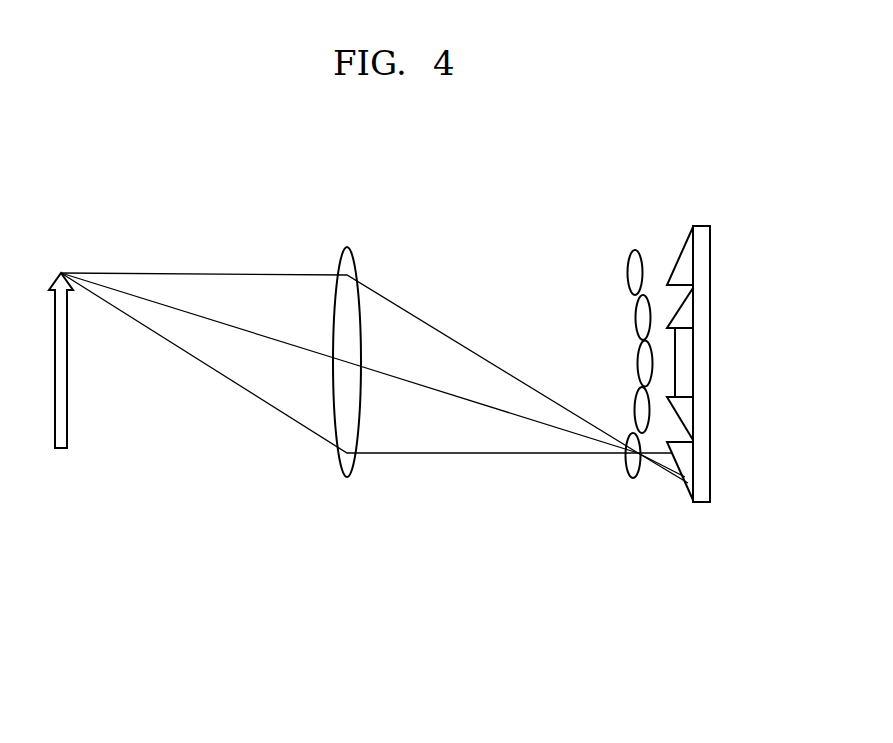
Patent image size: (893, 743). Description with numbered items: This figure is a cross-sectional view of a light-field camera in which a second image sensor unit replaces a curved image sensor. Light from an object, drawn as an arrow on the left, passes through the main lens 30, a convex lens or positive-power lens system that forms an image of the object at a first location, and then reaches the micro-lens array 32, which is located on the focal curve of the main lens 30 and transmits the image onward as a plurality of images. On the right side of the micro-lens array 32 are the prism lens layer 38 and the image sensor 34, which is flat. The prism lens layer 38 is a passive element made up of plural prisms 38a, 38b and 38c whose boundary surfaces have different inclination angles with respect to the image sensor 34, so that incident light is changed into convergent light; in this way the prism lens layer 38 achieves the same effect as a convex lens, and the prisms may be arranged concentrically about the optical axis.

The main lens 30 is at (347, 247).
The micro-lens array 32 is at (631, 252).
The image sensor 34 is at (702, 226).
The prism lens layer 38 is at (710, 345).
The prism 38a is at (684, 270).
The prism 38b is at (685, 315).
The prism 38c is at (685, 364).